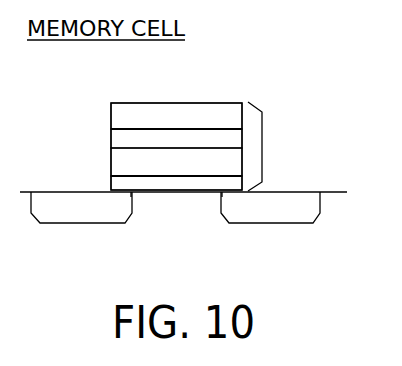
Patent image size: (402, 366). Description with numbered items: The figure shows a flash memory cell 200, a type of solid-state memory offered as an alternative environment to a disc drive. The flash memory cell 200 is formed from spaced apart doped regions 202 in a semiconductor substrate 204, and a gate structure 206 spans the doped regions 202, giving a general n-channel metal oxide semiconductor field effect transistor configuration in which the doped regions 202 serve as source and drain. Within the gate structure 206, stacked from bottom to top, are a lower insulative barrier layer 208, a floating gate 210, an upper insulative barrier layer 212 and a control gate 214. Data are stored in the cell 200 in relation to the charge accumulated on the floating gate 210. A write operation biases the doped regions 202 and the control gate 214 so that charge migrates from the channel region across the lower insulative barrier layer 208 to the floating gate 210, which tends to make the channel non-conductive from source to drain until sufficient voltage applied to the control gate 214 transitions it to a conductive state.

The flash memory cell 200 is at (269, 81).
The doped regions 202 is at (57, 223).
The semiconductor substrate 204 is at (278, 263).
The gate structure 206 is at (262, 144).
The lower insulative barrier layer 208 is at (110, 183).
The floating gate 210 is at (110, 163).
The upper insulative barrier layer 212 is at (110, 145).
The control gate 214 is at (110, 117).